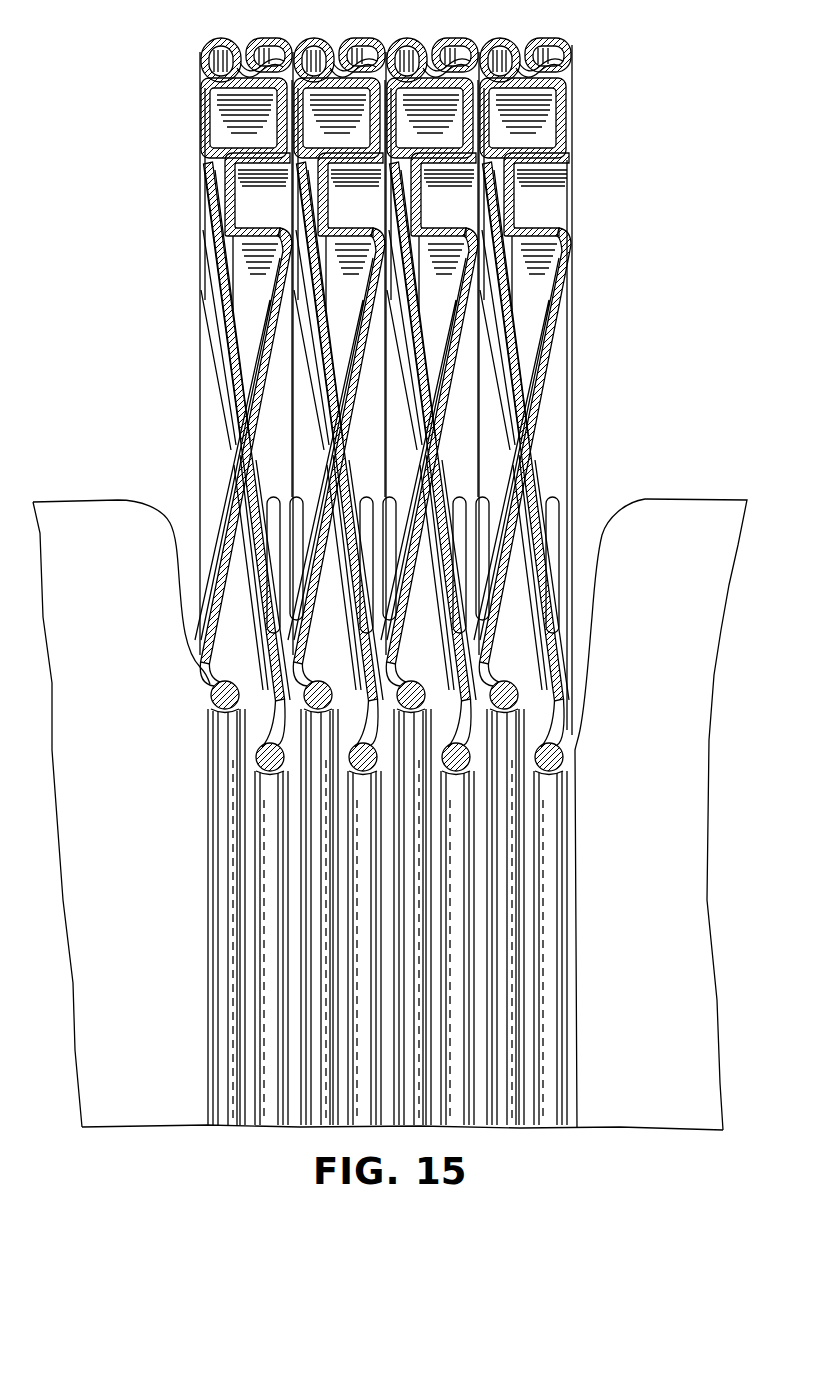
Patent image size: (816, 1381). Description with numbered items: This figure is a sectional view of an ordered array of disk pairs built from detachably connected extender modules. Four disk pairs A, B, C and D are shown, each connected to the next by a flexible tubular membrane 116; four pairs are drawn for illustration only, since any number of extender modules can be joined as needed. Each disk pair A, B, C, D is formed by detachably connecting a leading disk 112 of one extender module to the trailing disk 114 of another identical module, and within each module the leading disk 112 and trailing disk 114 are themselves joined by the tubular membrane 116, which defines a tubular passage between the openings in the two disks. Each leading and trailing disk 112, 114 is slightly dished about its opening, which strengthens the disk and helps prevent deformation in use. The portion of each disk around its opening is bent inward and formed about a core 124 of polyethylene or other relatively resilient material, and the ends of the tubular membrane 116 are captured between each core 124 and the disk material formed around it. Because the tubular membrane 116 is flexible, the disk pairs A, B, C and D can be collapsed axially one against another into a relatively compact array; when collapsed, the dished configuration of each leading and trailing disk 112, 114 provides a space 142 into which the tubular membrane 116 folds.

The disk pair A is at (242, 35).
The disk pair B is at (340, 35).
The disk pair C is at (424, 35).
The disk pair D is at (515, 35).
The leading disk 112 is at (478, 215).
The trailing disk 114 is at (257, 422).
The tubular membrane 116 is at (75, 503).
The core 124 is at (212, 703).
The space 142 is at (309, 477).